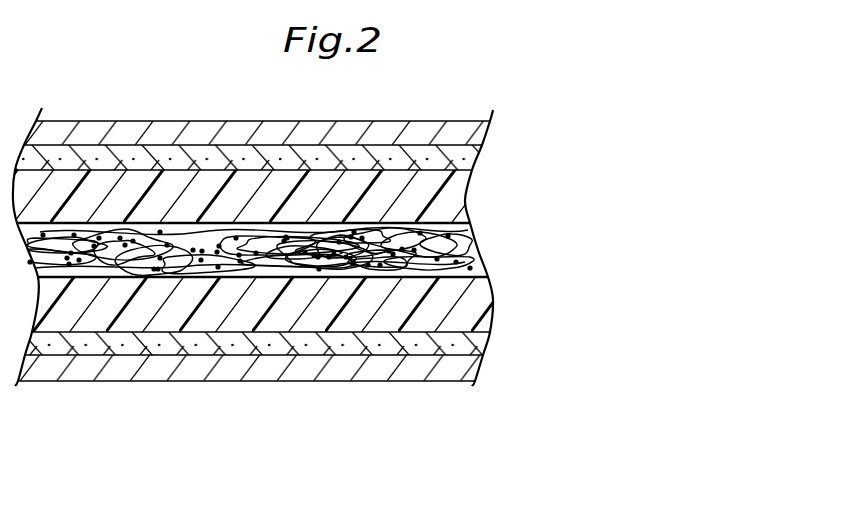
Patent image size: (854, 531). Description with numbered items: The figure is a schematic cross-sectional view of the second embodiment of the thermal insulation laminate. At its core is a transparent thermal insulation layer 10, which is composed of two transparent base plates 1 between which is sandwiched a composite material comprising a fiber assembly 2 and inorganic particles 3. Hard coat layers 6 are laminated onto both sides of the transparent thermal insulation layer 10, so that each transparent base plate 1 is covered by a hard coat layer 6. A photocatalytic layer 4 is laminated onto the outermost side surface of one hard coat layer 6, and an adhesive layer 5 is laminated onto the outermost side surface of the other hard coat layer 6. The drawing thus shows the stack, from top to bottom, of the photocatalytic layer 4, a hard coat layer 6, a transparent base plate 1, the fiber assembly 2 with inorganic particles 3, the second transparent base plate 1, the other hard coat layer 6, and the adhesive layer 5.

The transparent base plate 1 is at (455, 192).
The fiber assembly 2 is at (472, 235).
The inorganic particles 3 is at (472, 268).
The photocatalytic layer 4 is at (468, 133).
The adhesive layer 5 is at (468, 370).
The hard coat layer 6 is at (462, 155).
The transparent thermal insulation layer 10 is at (791, 253).